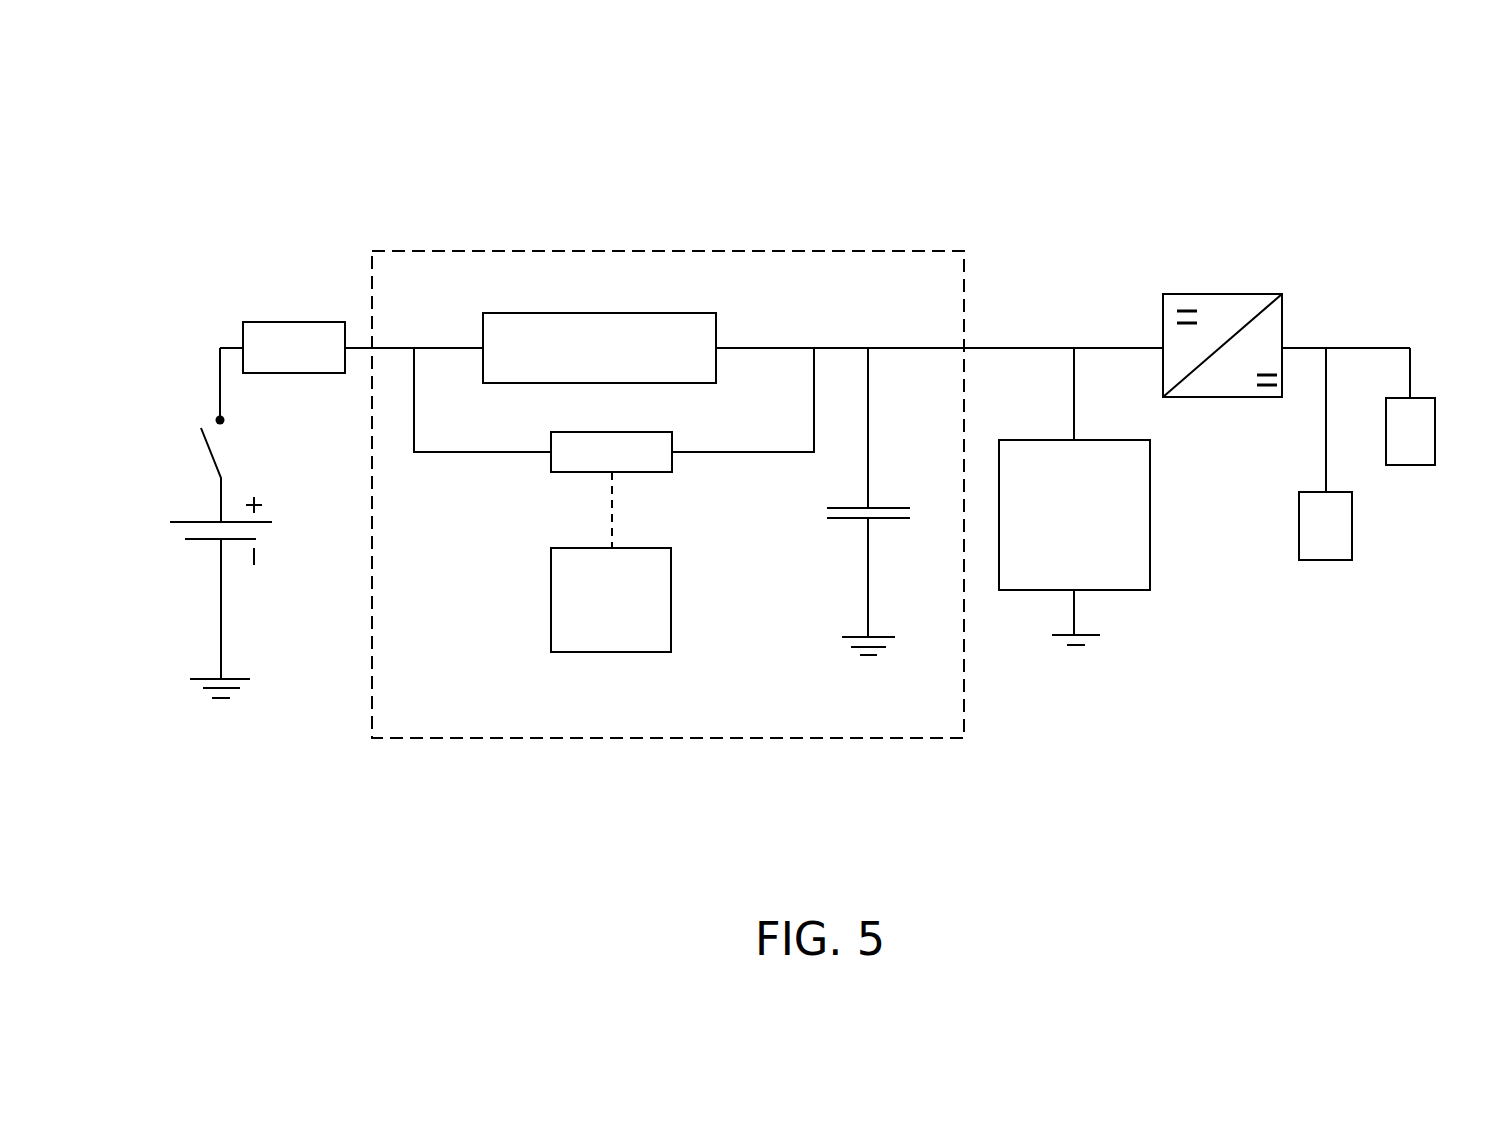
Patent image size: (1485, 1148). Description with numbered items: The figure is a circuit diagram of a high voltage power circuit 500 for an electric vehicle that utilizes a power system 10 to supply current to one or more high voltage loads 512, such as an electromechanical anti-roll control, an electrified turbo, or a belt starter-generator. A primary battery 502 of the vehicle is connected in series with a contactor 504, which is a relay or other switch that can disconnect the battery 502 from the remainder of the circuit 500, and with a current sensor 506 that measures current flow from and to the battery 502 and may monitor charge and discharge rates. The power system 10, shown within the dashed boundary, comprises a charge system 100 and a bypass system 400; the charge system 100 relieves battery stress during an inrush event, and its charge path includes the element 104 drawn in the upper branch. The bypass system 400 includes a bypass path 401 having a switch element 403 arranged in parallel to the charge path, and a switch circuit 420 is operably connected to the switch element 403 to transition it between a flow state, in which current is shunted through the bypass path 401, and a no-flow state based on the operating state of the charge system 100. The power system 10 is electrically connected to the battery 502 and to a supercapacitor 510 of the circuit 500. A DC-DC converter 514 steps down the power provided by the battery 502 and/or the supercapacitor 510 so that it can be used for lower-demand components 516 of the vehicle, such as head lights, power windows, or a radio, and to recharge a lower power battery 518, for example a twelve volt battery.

The high voltage power circuit 500 is at (1103, 142).
The power system 10 is at (789, 222).
The charge system 100 is at (825, 318).
The inductor 104 is at (716, 313).
The bypass system 400 is at (482, 489).
The bypass path 401 is at (768, 452).
The switch element 403 is at (672, 460).
The switch circuit 420 is at (551, 628).
The primary battery 502 is at (170, 522).
The contactor 504 is at (212, 457).
The current sensor 506 is at (277, 322).
The supercapacitor 510 is at (900, 518).
The high voltage load 512 is at (1150, 560).
The DC-DC converter 514 is at (1240, 294).
The lower-demand components 516 is at (1352, 560).
The lower power battery 518 is at (1435, 465).